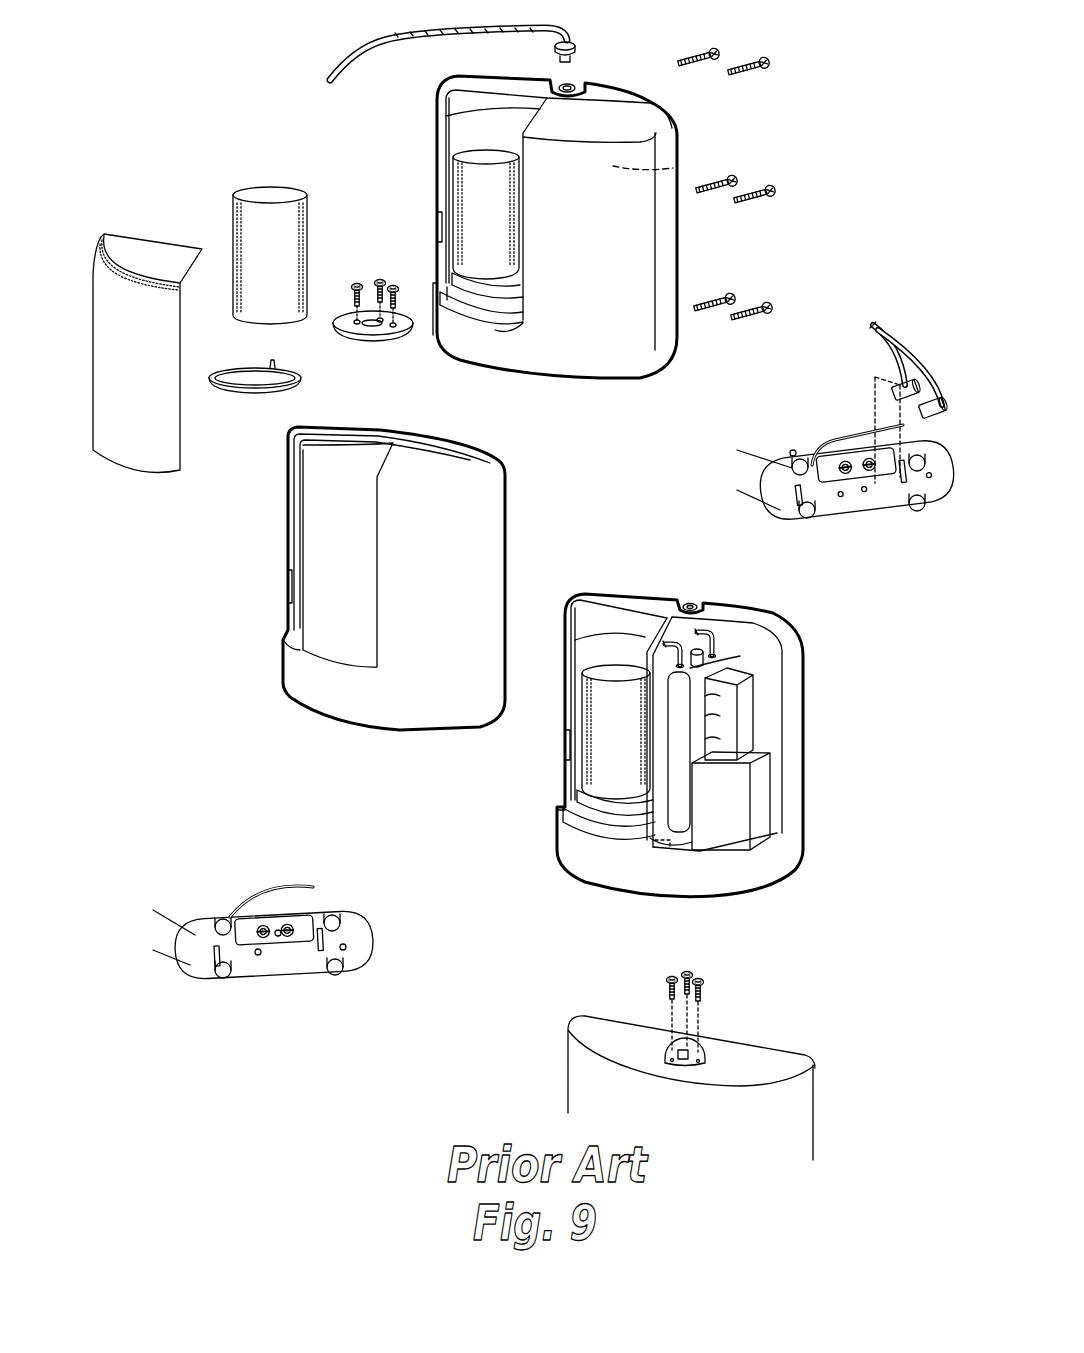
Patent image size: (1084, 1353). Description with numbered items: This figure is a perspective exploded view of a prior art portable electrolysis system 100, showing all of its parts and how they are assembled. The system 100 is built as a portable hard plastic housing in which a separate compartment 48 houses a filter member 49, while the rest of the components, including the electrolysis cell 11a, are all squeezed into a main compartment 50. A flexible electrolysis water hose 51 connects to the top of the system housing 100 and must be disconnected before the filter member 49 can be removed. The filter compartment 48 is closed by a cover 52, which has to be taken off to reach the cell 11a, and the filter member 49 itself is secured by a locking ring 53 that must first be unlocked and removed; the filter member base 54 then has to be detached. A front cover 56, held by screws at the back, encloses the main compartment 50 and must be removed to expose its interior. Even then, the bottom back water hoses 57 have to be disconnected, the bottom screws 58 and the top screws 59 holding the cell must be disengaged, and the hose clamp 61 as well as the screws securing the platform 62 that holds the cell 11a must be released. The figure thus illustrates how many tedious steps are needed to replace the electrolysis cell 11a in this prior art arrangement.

The separate compartment 48 is at (480, 120).
The filter member 49 is at (472, 205).
The main compartment 50 is at (680, 166).
The flexible electrolysis water hose 51 is at (420, 27).
The cover 52 is at (132, 453).
The locking ring 53 is at (243, 393).
The filter member base 54 is at (358, 340).
The front cover 56 is at (447, 510).
The bottom back water hoses 57 is at (890, 333).
The bottom screws 58 is at (343, 947).
The top screws 59 is at (668, 983).
The hose clamp 61 is at (713, 652).
The platform 62 is at (665, 835).
The system housing 100 is at (603, 63).
The electrolysis cell 11a is at (692, 683).